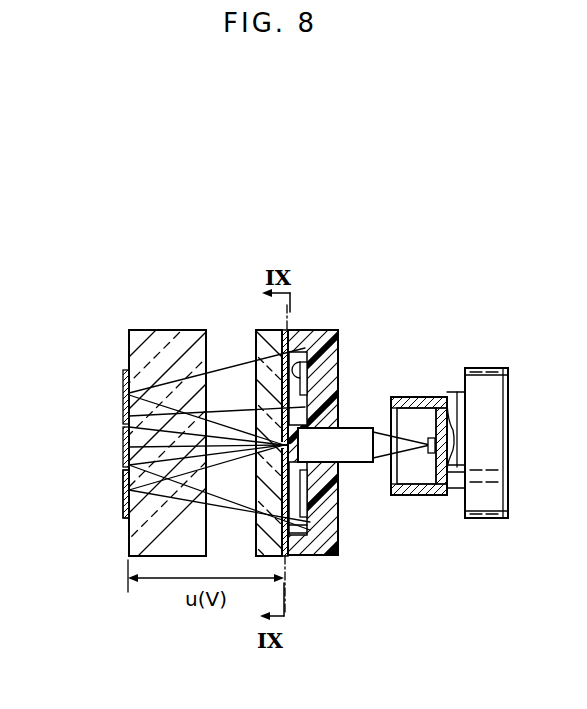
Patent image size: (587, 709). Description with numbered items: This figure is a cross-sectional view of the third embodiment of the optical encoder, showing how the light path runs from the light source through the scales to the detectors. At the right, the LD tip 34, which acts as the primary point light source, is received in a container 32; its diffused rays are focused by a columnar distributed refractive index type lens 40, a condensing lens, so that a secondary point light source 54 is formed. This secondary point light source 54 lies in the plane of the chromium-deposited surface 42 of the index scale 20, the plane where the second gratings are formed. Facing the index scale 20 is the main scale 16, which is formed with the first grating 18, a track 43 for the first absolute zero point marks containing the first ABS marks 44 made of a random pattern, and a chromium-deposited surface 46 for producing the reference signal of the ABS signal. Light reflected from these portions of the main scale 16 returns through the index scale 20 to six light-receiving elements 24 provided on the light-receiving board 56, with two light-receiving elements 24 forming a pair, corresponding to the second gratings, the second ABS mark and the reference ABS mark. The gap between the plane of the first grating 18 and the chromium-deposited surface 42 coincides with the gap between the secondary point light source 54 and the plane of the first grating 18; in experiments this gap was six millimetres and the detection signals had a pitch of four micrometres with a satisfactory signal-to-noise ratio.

The main scale 16 is at (168, 331).
The first grating 18 is at (123, 442).
The index scale 20 is at (259, 331).
The light-receiving elements 24 is at (323, 363).
The container 32 is at (460, 396).
The LD tip 34 is at (428, 440).
The columnar distributed refractive index type lens 40 is at (360, 456).
The chromium-deposited surface 42 is at (292, 349).
The track for first absolute zero point marks 43 is at (123, 494).
The first ABS marks 44 is at (75, 494).
The chromium-deposited surface for producing a reference signal 46 is at (123, 392).
The secondary point light source 54 is at (330, 400).
The light-receiving board 56 is at (345, 554).